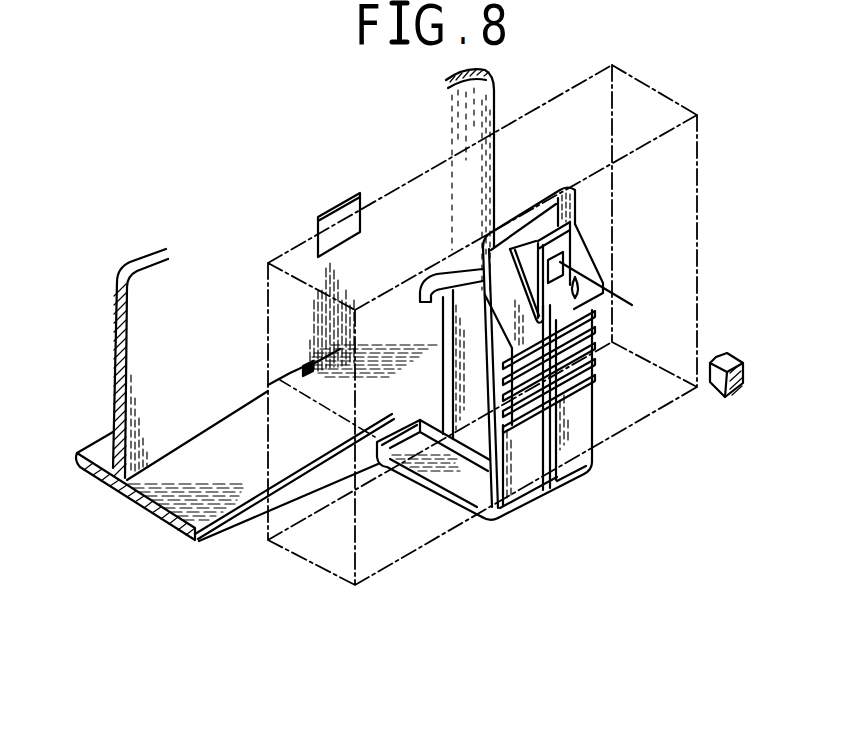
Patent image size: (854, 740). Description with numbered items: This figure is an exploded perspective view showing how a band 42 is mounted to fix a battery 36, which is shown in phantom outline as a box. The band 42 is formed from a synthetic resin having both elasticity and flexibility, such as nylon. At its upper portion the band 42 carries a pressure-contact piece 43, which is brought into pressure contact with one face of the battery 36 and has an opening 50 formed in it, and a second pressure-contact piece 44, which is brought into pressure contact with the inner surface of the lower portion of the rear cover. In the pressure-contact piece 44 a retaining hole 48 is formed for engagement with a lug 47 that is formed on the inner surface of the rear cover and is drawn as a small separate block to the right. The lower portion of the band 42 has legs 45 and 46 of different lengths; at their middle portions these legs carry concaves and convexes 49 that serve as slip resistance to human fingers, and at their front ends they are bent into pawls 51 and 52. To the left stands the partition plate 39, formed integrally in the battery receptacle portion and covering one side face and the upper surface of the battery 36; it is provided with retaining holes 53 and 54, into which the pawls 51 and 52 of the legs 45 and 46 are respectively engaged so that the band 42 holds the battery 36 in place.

The battery 36 is at (298, 556).
The partition plate 39 is at (140, 326).
The band 42 is at (580, 447).
The pressure-contact piece 43 is at (520, 248).
The pressure-contact piece 44 is at (557, 192).
The leg 45 is at (558, 470).
The leg 46 is at (513, 495).
The lug 47 is at (722, 358).
The retaining hole 48 is at (560, 262).
The concaves and convexes 49 is at (587, 350).
The opening 50 is at (515, 258).
The pawl 51 is at (420, 298).
The pawl 52 is at (402, 443).
The retaining hole 53 is at (335, 213).
The retaining hole 54 is at (283, 380).